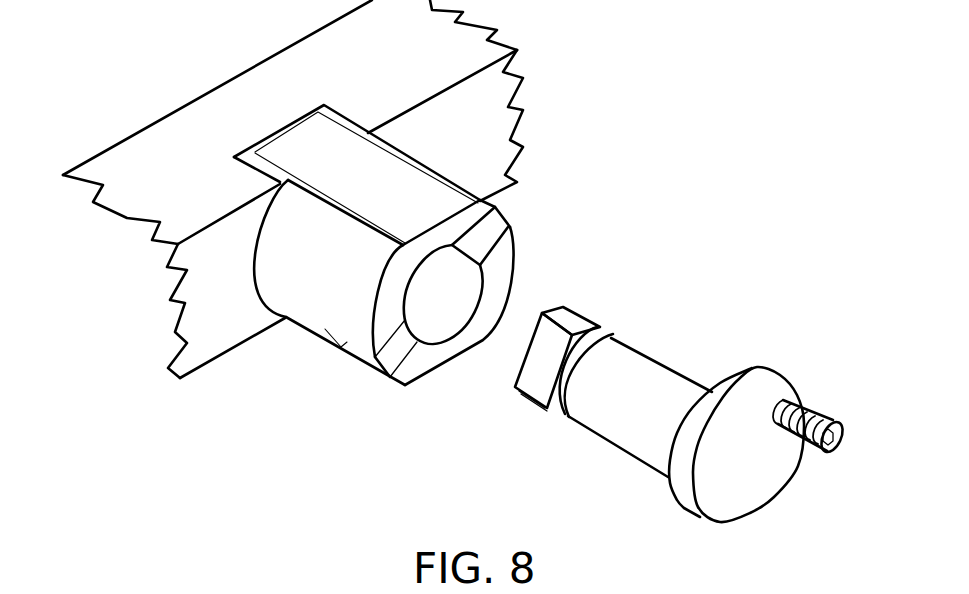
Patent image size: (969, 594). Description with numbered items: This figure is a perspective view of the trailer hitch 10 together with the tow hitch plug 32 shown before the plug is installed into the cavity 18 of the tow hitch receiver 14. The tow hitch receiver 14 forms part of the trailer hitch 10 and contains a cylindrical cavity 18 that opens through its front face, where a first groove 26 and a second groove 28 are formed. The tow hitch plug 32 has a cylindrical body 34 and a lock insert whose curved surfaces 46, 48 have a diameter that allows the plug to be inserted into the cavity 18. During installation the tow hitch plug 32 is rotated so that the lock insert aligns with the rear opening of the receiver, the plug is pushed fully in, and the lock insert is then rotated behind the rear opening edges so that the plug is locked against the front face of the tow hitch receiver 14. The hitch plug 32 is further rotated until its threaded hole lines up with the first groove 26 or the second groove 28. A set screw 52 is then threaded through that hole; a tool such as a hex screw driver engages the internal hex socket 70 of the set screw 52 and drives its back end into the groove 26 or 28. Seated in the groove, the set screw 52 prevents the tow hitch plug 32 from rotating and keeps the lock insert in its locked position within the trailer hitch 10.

The trailer hitch 10 is at (278, 496).
The tow hitch receiver 14 is at (422, 254).
The cylindrical cavity 18 is at (463, 302).
The first groove 26 is at (484, 237).
The second groove 28 is at (390, 357).
The tow hitch plug 32 is at (750, 469).
The cylindrical body 34 is at (672, 378).
The curved surface 46 is at (547, 362).
The curved surface 48 is at (526, 393).
The set screw 52 is at (823, 421).
The internal hex socket 70 is at (843, 447).